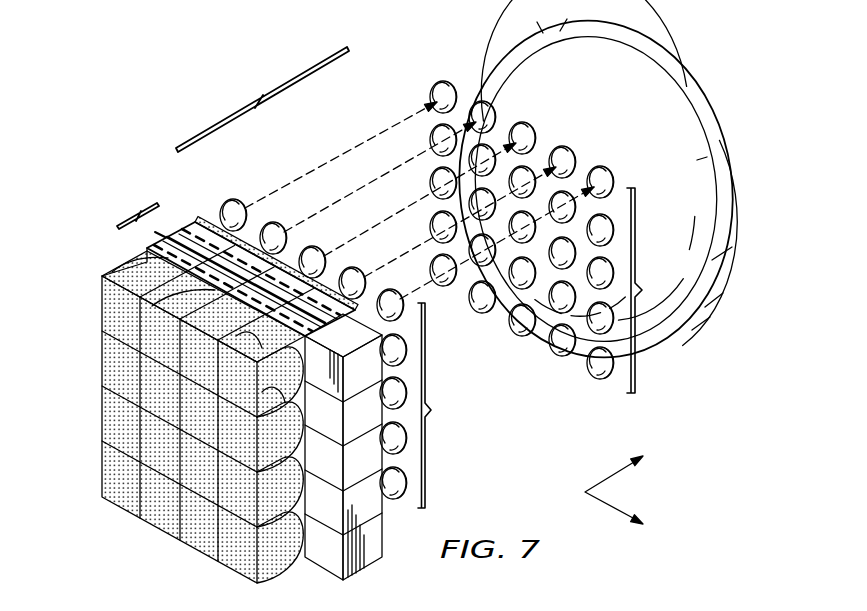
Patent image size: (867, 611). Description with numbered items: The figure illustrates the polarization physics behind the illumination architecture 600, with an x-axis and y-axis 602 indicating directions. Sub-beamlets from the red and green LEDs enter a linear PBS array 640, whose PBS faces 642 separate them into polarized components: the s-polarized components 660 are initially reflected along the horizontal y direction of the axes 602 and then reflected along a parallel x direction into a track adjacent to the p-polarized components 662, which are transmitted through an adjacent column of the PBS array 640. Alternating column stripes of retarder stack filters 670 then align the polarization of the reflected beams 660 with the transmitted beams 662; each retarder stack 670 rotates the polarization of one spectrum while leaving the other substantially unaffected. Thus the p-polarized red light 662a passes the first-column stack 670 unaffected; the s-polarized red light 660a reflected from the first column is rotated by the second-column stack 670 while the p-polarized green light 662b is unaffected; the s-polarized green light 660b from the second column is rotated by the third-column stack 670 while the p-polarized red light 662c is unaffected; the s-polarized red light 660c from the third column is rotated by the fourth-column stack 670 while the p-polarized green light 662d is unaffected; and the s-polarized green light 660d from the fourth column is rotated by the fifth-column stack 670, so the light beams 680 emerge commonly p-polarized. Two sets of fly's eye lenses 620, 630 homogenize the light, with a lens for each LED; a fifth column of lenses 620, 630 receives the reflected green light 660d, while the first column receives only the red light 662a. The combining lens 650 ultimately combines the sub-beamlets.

The illumination architecture 600 is at (156, 77).
The x-axis and y-axis 602 is at (598, 466).
The fly's eye lens array 620 is at (388, 441).
The fly's eye lens array 630 is at (555, 237).
The linear PBS array 640 is at (126, 205).
The PBS faces 642 is at (160, 233).
The combining lens 650 is at (672, 114).
The s-polarized components 660 is at (210, 243).
The s-polarized red light reflected from the first column 660a is at (166, 258).
The s-polarized green light reflected from the second column 660b is at (192, 290).
The s-polarized red light reflected from the third column 660c is at (258, 352).
The s-polarized green light reflected from the fourth column 660d is at (274, 406).
The p-polarized components 662 is at (224, 222).
The p-polarized red light 662a is at (368, 140).
The p-polarized green light 662b is at (413, 158).
The p-polarized red light 662c is at (364, 230).
The p-polarized green light 662d is at (533, 178).
The retarder stack filters 670 is at (178, 201).
The light beams 680 is at (262, 99).